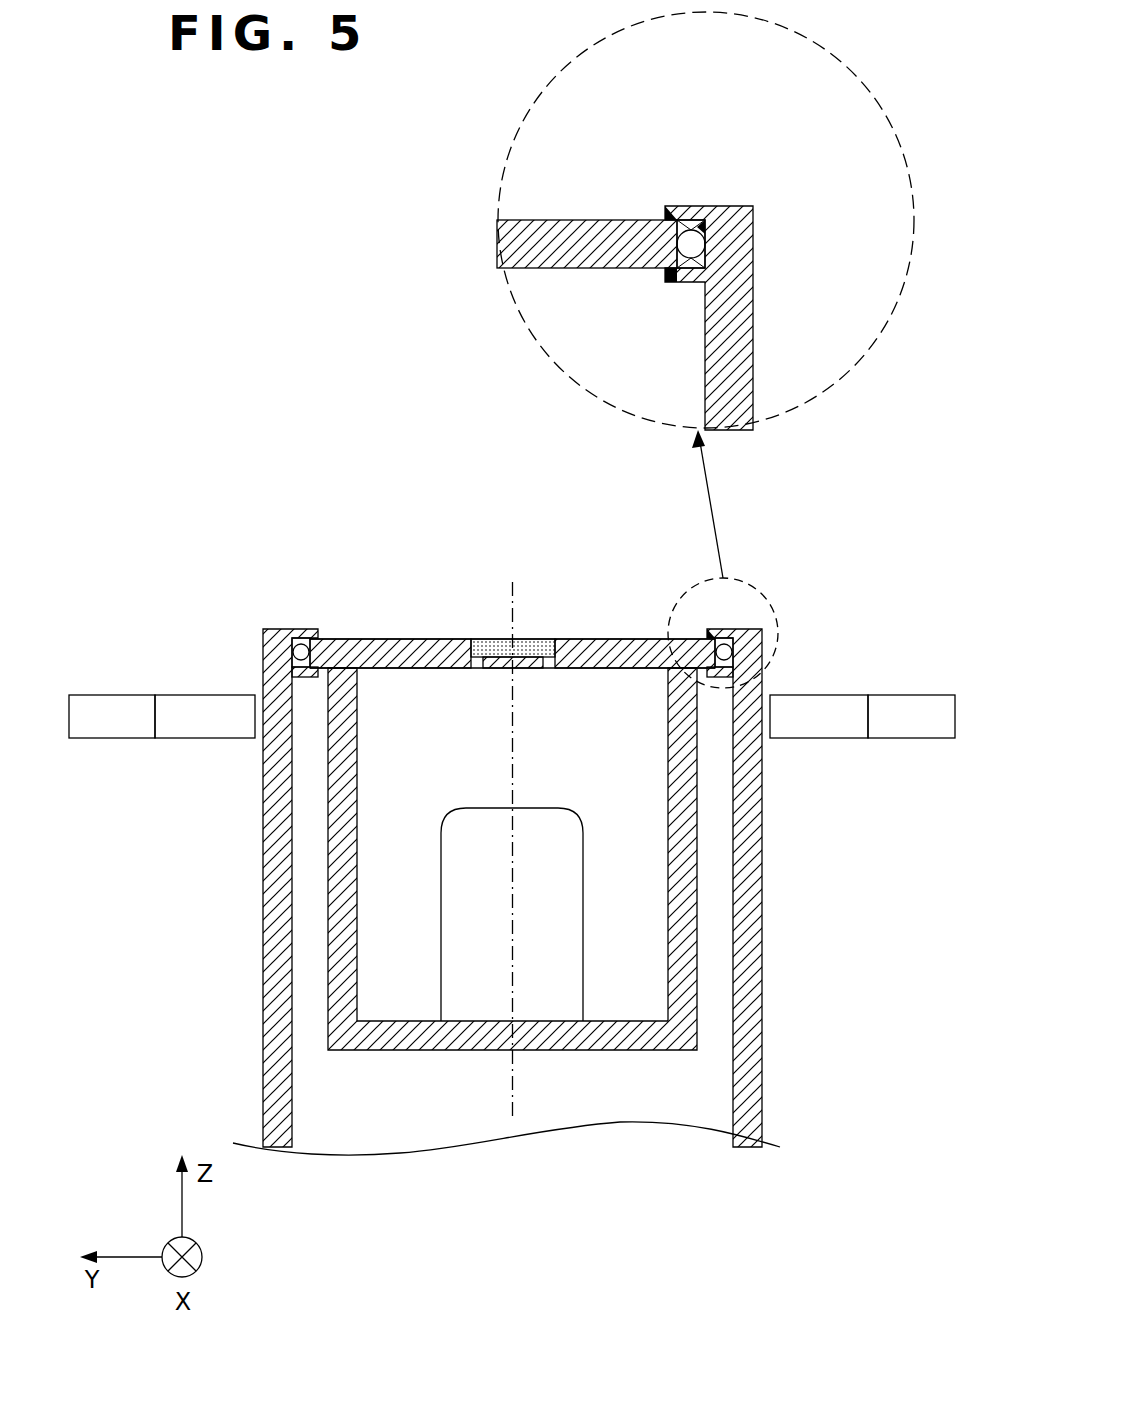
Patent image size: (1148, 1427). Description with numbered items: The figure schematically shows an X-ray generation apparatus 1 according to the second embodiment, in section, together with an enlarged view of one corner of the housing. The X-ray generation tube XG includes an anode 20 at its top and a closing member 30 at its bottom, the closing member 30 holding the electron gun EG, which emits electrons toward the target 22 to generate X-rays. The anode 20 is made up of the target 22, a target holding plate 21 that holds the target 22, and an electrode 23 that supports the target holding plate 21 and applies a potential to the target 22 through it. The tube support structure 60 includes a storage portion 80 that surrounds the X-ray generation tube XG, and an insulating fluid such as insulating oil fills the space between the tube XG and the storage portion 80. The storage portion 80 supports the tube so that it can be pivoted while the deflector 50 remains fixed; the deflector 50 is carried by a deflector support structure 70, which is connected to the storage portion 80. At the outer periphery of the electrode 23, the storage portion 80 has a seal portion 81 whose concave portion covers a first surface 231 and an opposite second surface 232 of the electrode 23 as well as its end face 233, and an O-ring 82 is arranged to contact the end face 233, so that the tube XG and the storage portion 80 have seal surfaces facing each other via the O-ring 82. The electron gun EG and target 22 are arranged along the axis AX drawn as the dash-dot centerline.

The X-ray generation apparatus 1 is at (578, 1218).
The anode 20 is at (523, 588).
The target holding plate 21 is at (527, 657).
The target 22 is at (545, 652).
The electrode 23 is at (610, 639).
The closing member 30 is at (618, 1050).
The deflector 50 is at (203, 695).
The tube support structure 60 is at (195, 945).
The deflector support structure 70 is at (105, 695).
The storage portion 80 is at (263, 843).
The seal portion 81 is at (745, 612).
The O-ring 82 is at (301, 644).
The first surface 231 is at (662, 208).
The second surface 232 is at (670, 282).
The end face 233 is at (708, 226).
The X-ray generation tube XG is at (410, 580).
The electron gun EG is at (583, 860).
The axis AX is at (513, 1092).